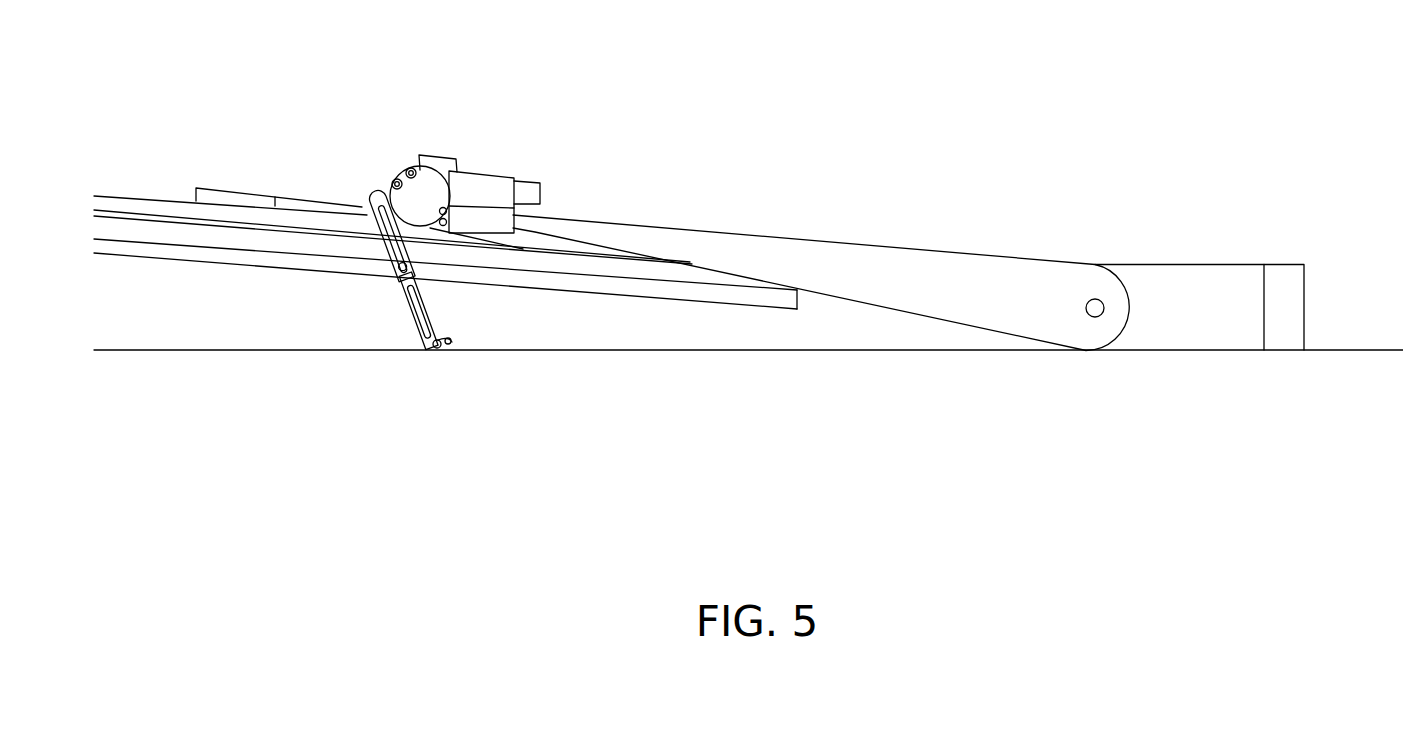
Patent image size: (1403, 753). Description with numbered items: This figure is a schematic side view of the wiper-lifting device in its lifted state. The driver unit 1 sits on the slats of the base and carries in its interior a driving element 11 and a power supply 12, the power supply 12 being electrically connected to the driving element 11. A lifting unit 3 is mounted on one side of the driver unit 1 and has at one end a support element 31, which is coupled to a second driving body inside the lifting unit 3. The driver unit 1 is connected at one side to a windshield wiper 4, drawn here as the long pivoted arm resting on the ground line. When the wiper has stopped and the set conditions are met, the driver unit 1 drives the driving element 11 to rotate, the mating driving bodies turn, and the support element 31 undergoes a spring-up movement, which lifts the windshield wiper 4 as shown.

The driver unit 1 is at (509, 116).
The driving element 11 is at (438, 163).
The power supply 12 is at (537, 185).
The lifting unit 3 is at (397, 183).
The support element 31 is at (412, 315).
The windshield wiper 4 is at (720, 252).